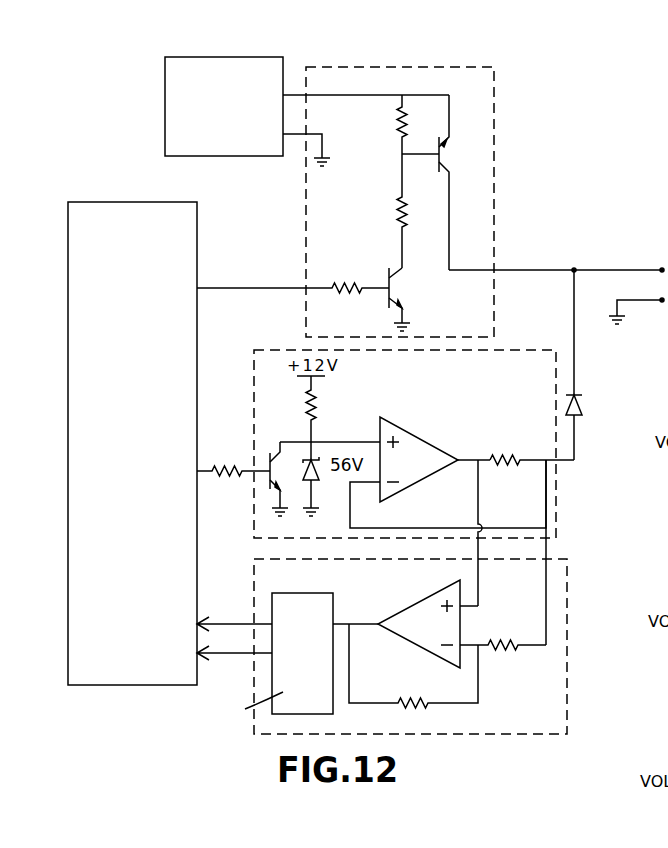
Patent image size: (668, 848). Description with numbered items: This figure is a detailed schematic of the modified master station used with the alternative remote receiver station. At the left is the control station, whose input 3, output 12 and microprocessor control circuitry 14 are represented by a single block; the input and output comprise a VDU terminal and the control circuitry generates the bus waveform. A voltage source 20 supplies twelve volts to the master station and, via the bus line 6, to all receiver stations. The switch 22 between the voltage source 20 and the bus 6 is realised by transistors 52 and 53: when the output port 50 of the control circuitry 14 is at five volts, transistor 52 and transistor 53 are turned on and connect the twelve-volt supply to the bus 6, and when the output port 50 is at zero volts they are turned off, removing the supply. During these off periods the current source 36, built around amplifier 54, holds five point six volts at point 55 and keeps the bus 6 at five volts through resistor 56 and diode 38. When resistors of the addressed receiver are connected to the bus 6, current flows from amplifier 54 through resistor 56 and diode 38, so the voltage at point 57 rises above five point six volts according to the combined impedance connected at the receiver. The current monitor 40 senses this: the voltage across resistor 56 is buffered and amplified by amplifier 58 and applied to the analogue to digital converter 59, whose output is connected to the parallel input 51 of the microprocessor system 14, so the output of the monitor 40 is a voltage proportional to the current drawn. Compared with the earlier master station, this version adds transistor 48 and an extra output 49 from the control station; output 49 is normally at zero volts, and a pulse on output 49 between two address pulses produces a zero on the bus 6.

The inputs 3 is at (132, 430).
The output 12 is at (132, 430).
The control circuitry 14 is at (100, 202).
The voltage source 20 is at (235, 57).
The switch 22 is at (494, 101).
The transistor 53 is at (442, 156).
The transistor 52 is at (393, 291).
The output port 50 is at (229, 278).
The bus line 6 is at (590, 270).
The diode 38 is at (582, 411).
The point 55 is at (576, 462).
The current source 36 is at (556, 502).
The amplifier 54 is at (418, 439).
The point 57 is at (466, 458).
The resistor 56 is at (501, 458).
The transistor 48 is at (265, 486).
The output 49 is at (200, 451).
The input 51 is at (205, 622).
The analogue to digital converter 59 is at (333, 594).
The amplifier 58 is at (413, 606).
The current monitor 40 is at (567, 648).